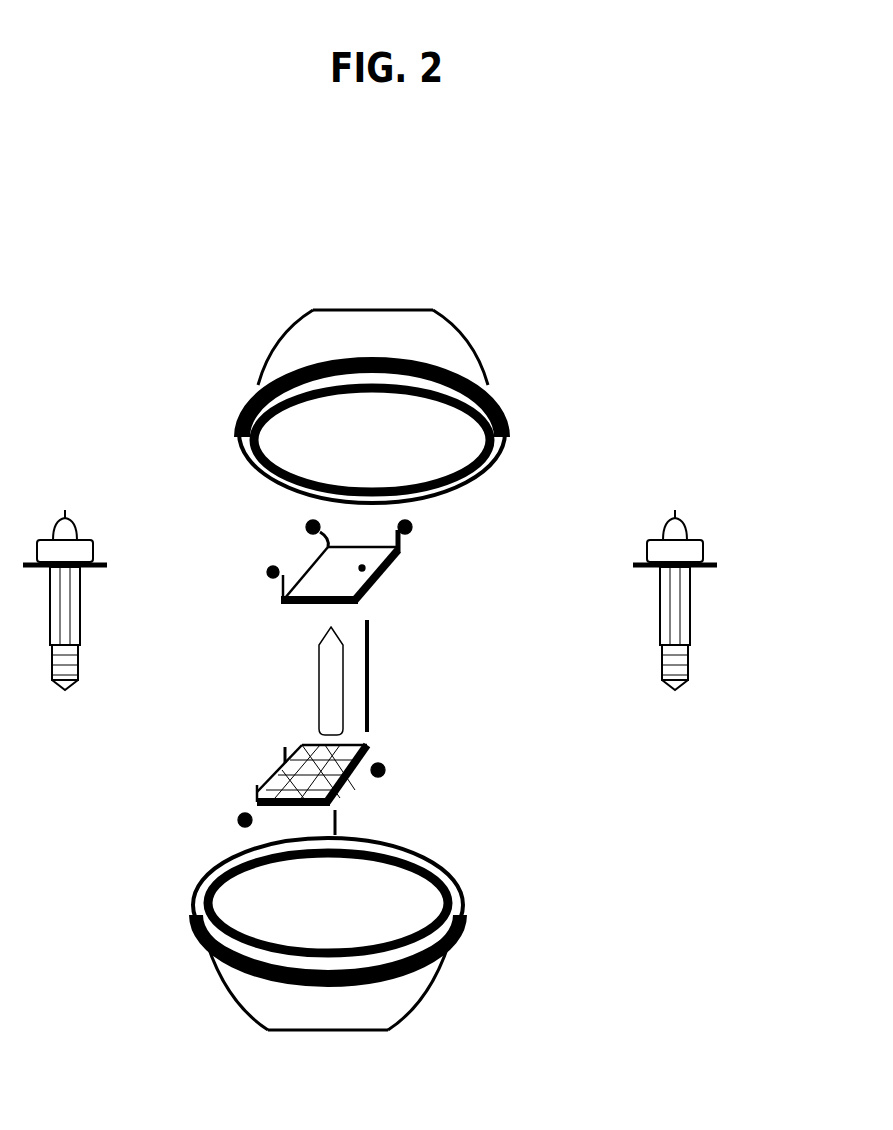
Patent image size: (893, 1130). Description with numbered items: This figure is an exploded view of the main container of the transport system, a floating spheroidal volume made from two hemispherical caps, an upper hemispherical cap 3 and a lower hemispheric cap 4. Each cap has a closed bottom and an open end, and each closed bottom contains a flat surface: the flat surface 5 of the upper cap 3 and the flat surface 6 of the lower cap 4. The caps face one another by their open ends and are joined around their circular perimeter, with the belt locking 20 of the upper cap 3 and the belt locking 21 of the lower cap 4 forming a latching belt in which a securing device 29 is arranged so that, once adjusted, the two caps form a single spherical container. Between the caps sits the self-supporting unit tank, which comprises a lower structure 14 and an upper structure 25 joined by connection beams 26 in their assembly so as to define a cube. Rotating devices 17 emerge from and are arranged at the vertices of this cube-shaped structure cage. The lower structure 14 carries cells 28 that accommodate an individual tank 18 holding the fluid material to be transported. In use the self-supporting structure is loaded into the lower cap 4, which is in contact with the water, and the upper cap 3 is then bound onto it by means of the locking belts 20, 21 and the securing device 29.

The upper hemispherical cap 3 is at (462, 337).
The lower hemispheric cap 4 is at (435, 978).
The flat surface of the cap 5 is at (300, 303).
The flat surface of the cap 6 is at (322, 1043).
The lower structure of the self-supporting tank 14 is at (347, 780).
The rotating device 17 is at (265, 572).
The individual tank of the material to be transported 18 is at (318, 686).
The belt locking of the upper hemispherical cap 20 is at (505, 405).
The belt locking of the lower hemispherical cap 21 is at (463, 930).
The upper structure self-supporting unit tank 25 is at (308, 565).
The connection beams 26 is at (370, 665).
The cells 28 is at (409, 811).
The securing device 29 is at (80, 605).